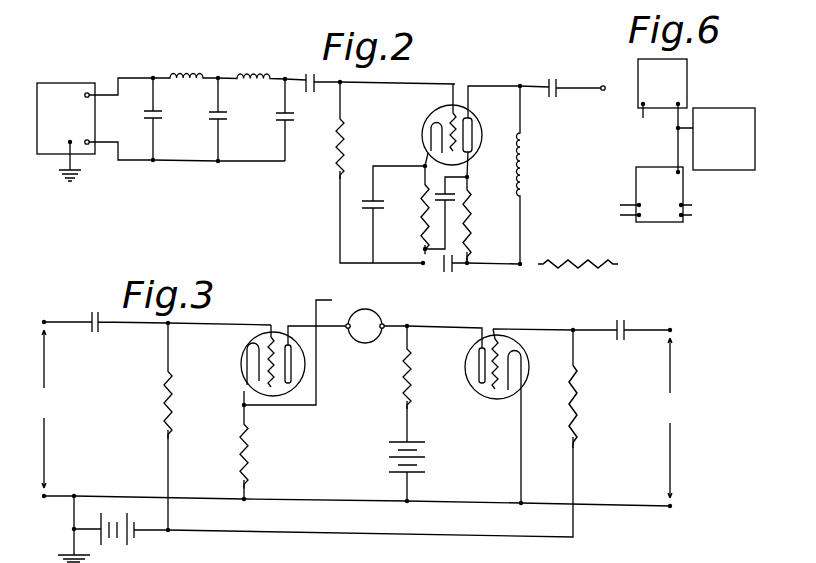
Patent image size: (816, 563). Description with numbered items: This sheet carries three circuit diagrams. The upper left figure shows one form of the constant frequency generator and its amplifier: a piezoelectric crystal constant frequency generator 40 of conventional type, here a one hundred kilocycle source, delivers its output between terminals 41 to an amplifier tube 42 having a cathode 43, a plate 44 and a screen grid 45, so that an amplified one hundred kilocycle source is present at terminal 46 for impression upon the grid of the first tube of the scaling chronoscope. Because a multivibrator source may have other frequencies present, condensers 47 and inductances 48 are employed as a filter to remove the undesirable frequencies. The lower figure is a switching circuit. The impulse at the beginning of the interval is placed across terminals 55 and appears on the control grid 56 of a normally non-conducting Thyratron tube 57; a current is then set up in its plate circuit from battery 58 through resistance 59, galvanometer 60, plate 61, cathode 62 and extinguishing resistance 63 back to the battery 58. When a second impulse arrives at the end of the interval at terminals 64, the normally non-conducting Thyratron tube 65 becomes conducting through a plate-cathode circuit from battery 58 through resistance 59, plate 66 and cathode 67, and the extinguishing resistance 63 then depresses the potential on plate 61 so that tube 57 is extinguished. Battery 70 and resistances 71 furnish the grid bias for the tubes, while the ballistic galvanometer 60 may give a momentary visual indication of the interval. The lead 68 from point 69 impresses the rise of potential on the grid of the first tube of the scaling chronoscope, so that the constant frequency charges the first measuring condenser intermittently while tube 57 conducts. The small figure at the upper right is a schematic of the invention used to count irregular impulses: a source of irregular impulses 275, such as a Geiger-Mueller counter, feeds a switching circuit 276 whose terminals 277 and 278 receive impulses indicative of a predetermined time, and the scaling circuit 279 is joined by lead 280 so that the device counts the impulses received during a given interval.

In FIG. 2, the piezoelectric crystal constant frequency generator 40 is at (37, 94).
In FIG. 2, the terminals 41 is at (87, 91).
In FIG. 2, the amplifier tube 42 is at (459, 135).
In FIG. 2, the cathode 43 is at (433, 118).
In FIG. 2, the plate 44 is at (471, 124).
In FIG. 2, the screen grid 45 is at (476, 140).
In FIG. 2, the terminal 46 is at (603, 93).
In FIG. 2, the condensers 47 is at (219, 120).
In FIG. 2, the inductances 48 is at (232, 73).
In FIG. 3, the terminals 55 is at (151, 405).
In FIG. 3, the control grid 56 is at (278, 377).
In FIG. 3, the Thyratron tube 57 is at (273, 382).
In FIG. 3, the battery 58 is at (382, 467).
In FIG. 3, the resistance 59 is at (397, 386).
In FIG. 3, the galvanometer 60 is at (371, 343).
In FIG. 3, the plate 61 is at (291, 364).
In FIG. 3, the cathode 62 is at (241, 363).
In FIG. 3, the extinguishing resistance 63 is at (240, 452).
In FIG. 3, the terminals 64 is at (666, 413).
In FIG. 3, the Thyratron tube 65 is at (553, 411).
In FIG. 3, the plate 66 is at (479, 361).
In FIG. 3, the cathode 67 is at (520, 352).
In FIG. 3, the lead 68 is at (300, 407).
In FIG. 3, the point 69 is at (243, 405).
In FIG. 3, the battery 70 is at (138, 542).
In FIG. 3, the resistances 71 is at (163, 397).
In FIG. 6, the source of irregular impulses 275 is at (687, 70).
In FIG. 6, the switching circuit 276 is at (685, 182).
In FIG. 6, the impulse terminal 277 is at (620, 208).
In FIG. 6, the impulse terminal 278 is at (692, 212).
In FIG. 6, the scaling circuit 279 is at (744, 108).
In FIG. 6, the lead 280 is at (673, 120).